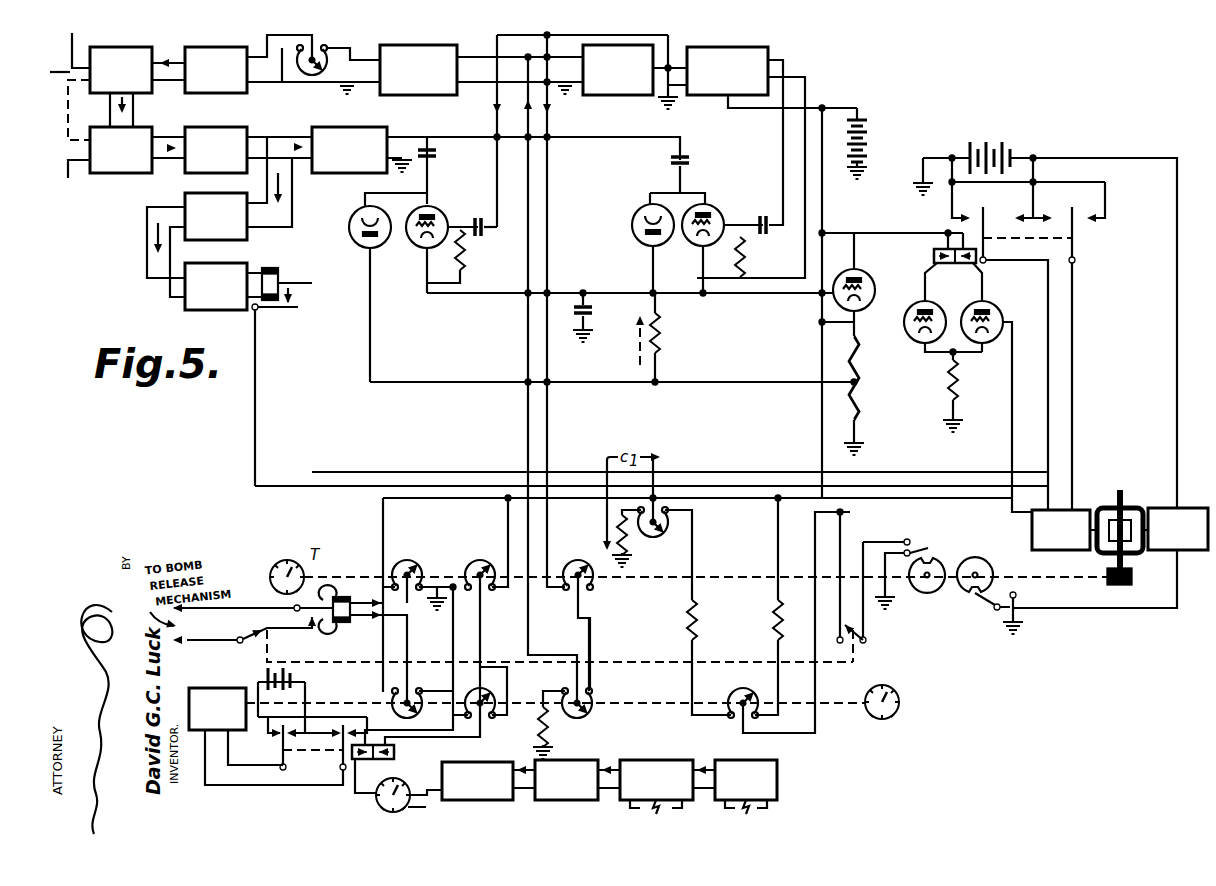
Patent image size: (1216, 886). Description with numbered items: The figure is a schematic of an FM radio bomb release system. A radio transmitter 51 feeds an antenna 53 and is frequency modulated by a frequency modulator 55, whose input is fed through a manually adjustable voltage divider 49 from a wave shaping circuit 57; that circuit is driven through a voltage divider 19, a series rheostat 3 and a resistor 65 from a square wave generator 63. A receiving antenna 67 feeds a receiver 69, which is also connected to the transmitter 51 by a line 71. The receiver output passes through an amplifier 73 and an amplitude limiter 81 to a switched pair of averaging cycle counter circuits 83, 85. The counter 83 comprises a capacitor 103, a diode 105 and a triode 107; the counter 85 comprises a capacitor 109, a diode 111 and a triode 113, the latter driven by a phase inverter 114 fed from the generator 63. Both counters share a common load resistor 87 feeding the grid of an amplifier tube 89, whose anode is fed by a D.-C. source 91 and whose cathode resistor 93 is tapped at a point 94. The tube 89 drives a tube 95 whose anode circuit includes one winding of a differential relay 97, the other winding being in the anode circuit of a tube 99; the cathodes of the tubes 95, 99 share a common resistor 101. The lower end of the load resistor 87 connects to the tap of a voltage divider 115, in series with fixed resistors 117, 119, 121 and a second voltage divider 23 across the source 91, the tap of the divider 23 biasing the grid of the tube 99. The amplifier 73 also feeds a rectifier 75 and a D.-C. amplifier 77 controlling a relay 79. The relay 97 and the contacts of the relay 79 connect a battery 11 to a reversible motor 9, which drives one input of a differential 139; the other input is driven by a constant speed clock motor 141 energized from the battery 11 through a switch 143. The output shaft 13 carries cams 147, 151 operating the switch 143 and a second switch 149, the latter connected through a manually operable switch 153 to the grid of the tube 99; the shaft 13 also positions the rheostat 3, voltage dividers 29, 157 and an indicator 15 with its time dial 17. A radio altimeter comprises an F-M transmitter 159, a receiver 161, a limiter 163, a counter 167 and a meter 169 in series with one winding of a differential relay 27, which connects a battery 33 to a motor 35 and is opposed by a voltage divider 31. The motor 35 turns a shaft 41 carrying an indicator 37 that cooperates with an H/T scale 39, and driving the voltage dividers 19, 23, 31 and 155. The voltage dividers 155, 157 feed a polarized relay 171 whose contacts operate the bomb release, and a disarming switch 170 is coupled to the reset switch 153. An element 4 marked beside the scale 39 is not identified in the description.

The series rheostat 3 is at (582, 560).
The shaft 4 is at (900, 698).
The reversible motor 9 is at (1072, 508).
The battery 11 is at (1000, 140).
The output shaft 13 is at (1062, 578).
The indicator 15 is at (300, 566).
The time dial 17 is at (278, 566).
The voltage divider 19 is at (592, 712).
The second voltage divider 23 is at (732, 690).
The differential relay 27 is at (396, 755).
The voltage divider 29 is at (489, 550).
The voltage divider 31 is at (483, 688).
The battery 33 is at (296, 678).
The motor 35 is at (228, 686).
The indicator 37 is at (895, 712).
The H/T scale 39 is at (866, 692).
The shaft 41 is at (660, 700).
The manually adjustable voltage divider 49 is at (308, 78).
The radio transmitter 51 is at (88, 41).
The antenna 53 is at (68, 70).
The frequency modulator 55 is at (188, 48).
The wave shaping circuit 57 is at (440, 97).
The square wave generator 63 is at (615, 97).
The resistor 65 is at (532, 728).
The receiving antenna 67 is at (68, 178).
The receiver 69 is at (152, 125).
The line 71 is at (128, 103).
The amplifier 73 is at (233, 119).
The rectifier 75 is at (184, 195).
The D.-C. amplifier 77 is at (184, 312).
The relay 79 is at (284, 254).
The amplitude limiter 81 is at (363, 119).
The averaging cycle counter circuit 83 is at (464, 190).
The averaging cycle counter circuit 85 is at (734, 190).
The common load resistor 87 is at (662, 340).
The amplifier tube 89 is at (870, 260).
The D.-C. source 91 is at (870, 130).
The resistor 93 is at (862, 378).
The intermediate point 94 is at (852, 384).
The tube 95 is at (908, 308).
The differential relay 97 is at (935, 256).
The tube 99 is at (998, 308).
The common resistor 101 is at (960, 380).
The capacitor 103 is at (436, 153).
The diode 105 is at (349, 227).
The triode 107 is at (412, 243).
The capacitor 109 is at (690, 158).
The diode 111 is at (632, 222).
The triode 113 is at (690, 248).
The phase inverter 114 is at (768, 48).
The voltage divider 115 is at (672, 527).
The fixed resistor 117 is at (630, 560).
The fixed resistor 119 is at (700, 622).
The fixed resistor 121 is at (772, 603).
The differential 139 is at (1150, 482).
The constant speed clock motor 141 is at (1190, 506).
The switch 143 is at (990, 610).
The cam 147 is at (990, 562).
The second switch 149 is at (912, 540).
The cam 151 is at (918, 595).
The manually operable switch 153 is at (860, 650).
The voltage divider 155 is at (412, 688).
The voltage divider 157 is at (410, 560).
The F-M transmitter 159 is at (760, 758).
The receiver 161 is at (662, 758).
The limiter 163 is at (580, 758).
The counter 167 is at (495, 760).
The current responsive meter 169 is at (378, 805).
The disarming switch 170 is at (260, 634).
The polarized relay 171 is at (352, 590).